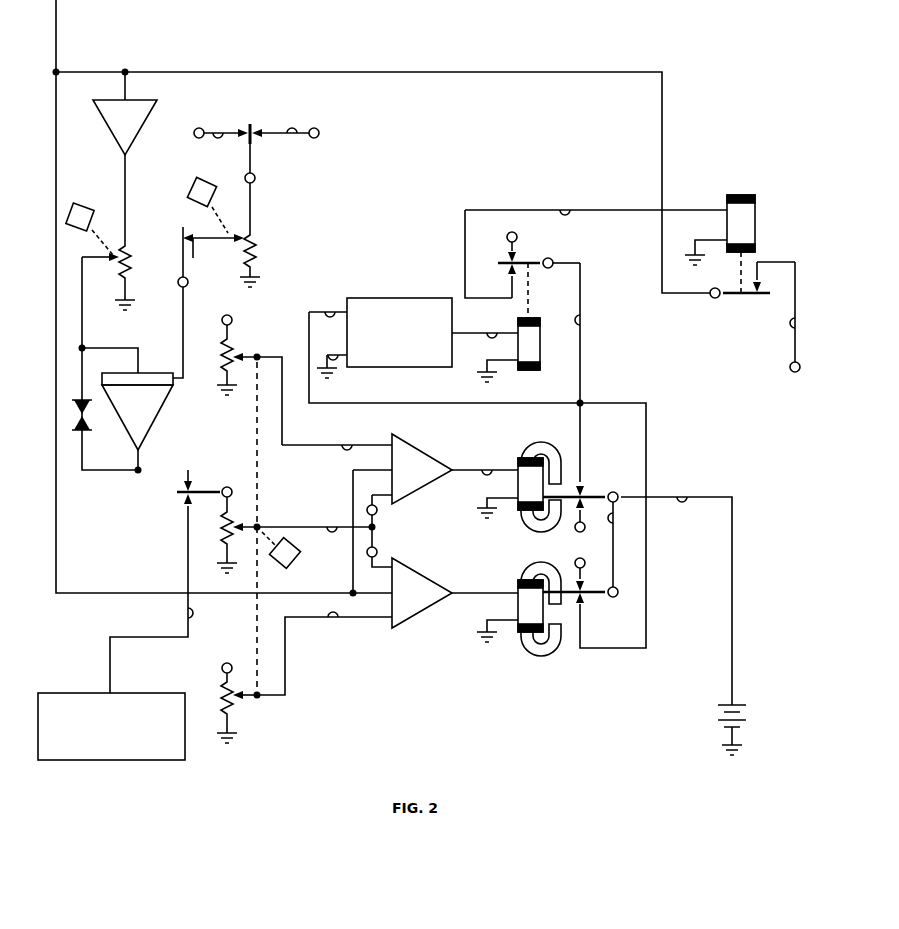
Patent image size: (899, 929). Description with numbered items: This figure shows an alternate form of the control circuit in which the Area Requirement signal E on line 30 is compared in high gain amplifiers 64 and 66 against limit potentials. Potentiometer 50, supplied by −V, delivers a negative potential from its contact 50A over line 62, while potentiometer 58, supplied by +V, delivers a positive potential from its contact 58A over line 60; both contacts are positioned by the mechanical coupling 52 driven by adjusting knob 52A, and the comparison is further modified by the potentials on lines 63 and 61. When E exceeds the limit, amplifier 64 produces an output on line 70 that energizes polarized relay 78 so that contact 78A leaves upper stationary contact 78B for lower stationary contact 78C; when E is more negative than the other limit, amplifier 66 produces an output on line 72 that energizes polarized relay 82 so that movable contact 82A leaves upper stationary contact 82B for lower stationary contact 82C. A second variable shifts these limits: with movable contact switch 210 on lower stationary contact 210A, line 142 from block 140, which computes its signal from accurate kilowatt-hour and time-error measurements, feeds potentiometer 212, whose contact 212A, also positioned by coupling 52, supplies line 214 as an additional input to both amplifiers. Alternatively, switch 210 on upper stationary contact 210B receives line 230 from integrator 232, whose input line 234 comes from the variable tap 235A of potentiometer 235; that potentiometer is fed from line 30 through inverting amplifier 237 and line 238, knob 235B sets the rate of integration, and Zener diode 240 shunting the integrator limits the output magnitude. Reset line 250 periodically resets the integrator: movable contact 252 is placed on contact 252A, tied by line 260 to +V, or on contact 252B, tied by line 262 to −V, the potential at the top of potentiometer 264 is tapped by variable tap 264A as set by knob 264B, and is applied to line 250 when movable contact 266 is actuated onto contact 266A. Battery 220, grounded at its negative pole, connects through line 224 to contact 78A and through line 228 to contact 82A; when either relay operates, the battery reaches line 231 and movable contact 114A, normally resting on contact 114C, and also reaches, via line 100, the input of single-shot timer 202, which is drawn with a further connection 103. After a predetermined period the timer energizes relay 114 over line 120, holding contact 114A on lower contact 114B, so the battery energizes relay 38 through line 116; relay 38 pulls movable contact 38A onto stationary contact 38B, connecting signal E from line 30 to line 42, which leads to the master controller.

The line 30 is at (50, 40).
The line 238 is at (122, 88).
The inverting amplifier 237 is at (145, 125).
The potentiometer 235 is at (130, 266).
The variable tap 235A is at (105, 262).
The knob 235B is at (88, 203).
The line 234 is at (102, 348).
The Zener diode 240 is at (95, 418).
The integrator 232 is at (165, 400).
The line 230 is at (142, 458).
The reset line 250 is at (183, 307).
The movable contact 266 is at (181, 250).
The contact 266A is at (193, 258).
The potentiometer 264 is at (262, 247).
The variable tap 264A is at (250, 233).
The knob 264B is at (186, 200).
The movable contact 252 is at (253, 150).
The contact 252A is at (246, 137).
The contact 252B is at (272, 129).
The line 260 is at (216, 130).
The line 262 is at (295, 138).
The potentiometer 50 is at (232, 353).
The contact 50A is at (243, 356).
The mechanical coupling 52 is at (262, 435).
The adjusting knob 52A is at (300, 562).
The movable contact switch 210 is at (227, 487).
The lower stationary contact 210A is at (185, 507).
The upper stationary contact 210B is at (190, 480).
The potentiometer 212 is at (233, 520).
The contact 212A is at (248, 527).
The line 214 is at (332, 525).
The line 62 is at (347, 445).
The line 63 is at (378, 510).
The line 61 is at (378, 550).
The high gain amplifier 64 is at (427, 455).
The high gain amplifier 66 is at (427, 580).
The line 70 is at (486, 468).
The line 72 is at (488, 592).
The line 60 is at (333, 622).
The potentiometer 58 is at (235, 723).
The contact 58A is at (243, 699).
The line 142 is at (186, 614).
The block 140 is at (70, 690).
The line 100 is at (330, 310).
The conductor 103 is at (333, 353).
The single-shot timer 202 is at (395, 298).
The line 120 is at (492, 331).
The relay 114 is at (541, 345).
The movable contact 114A is at (538, 262).
The lower contact 114B is at (512, 280).
The contact 114C is at (508, 258).
The line 116 is at (565, 208).
The line 231 is at (584, 320).
The relay 38 is at (756, 225).
The movable contact 38A is at (730, 296).
The stationary contact 38B is at (765, 283).
The line 42 is at (797, 325).
The polarized relay 78 is at (526, 450).
The relay contact 78A is at (597, 497).
The upper stationary contact 78B is at (578, 487).
The lower stationary contact 78C is at (584, 508).
The polarized relay 82 is at (523, 580).
The movable contact 82A is at (592, 596).
The upper stationary contact 82B is at (583, 588).
The lower stationary contact 82C is at (584, 605).
The line 228 is at (615, 520).
The line 224 is at (683, 495).
The battery 220 is at (715, 716).